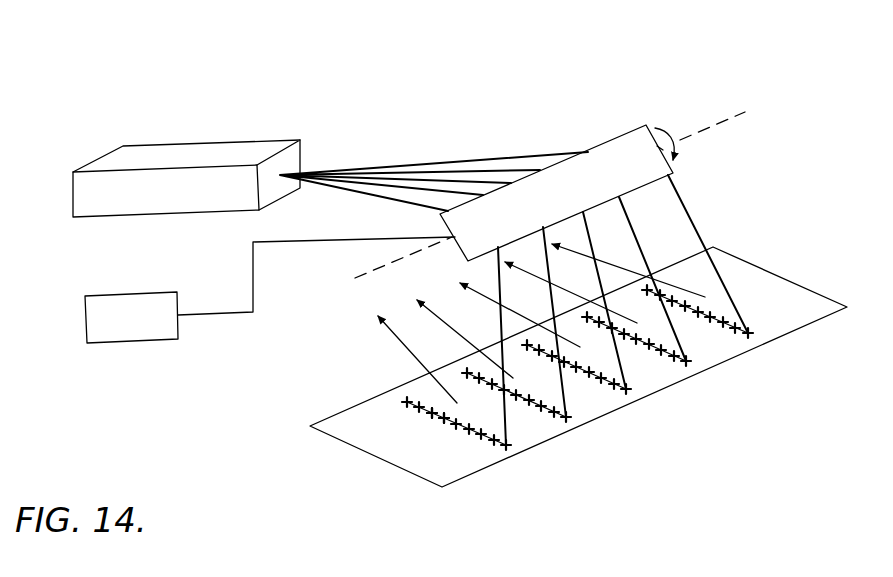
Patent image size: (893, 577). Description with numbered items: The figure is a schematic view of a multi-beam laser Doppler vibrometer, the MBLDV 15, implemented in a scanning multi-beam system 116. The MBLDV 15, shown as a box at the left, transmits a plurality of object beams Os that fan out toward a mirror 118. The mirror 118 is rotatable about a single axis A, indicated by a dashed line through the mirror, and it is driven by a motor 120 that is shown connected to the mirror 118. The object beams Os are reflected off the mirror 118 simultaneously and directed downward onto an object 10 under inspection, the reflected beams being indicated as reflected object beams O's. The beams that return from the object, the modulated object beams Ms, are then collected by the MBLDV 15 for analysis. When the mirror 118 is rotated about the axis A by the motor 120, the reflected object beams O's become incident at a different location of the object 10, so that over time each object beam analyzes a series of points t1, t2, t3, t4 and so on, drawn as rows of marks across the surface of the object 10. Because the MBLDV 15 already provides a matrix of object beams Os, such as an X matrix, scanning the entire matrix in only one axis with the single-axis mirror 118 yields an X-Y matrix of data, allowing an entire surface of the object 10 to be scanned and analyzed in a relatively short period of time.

The scanning multi-beam system 116 is at (258, 65).
The MBLDV 15 is at (95, 217).
The motor 120 is at (102, 343).
The mirror 118 is at (603, 143).
The object 10 is at (792, 332).
The axis A is at (695, 133).
The object beams Os is at (410, 148).
The reflected object beams O's is at (639, 307).
The modulated object beams Ms is at (382, 349).
The point t1 is at (409, 403).
The point t2 is at (422, 409).
The point t3 is at (435, 412).
The point t4 is at (445, 420).